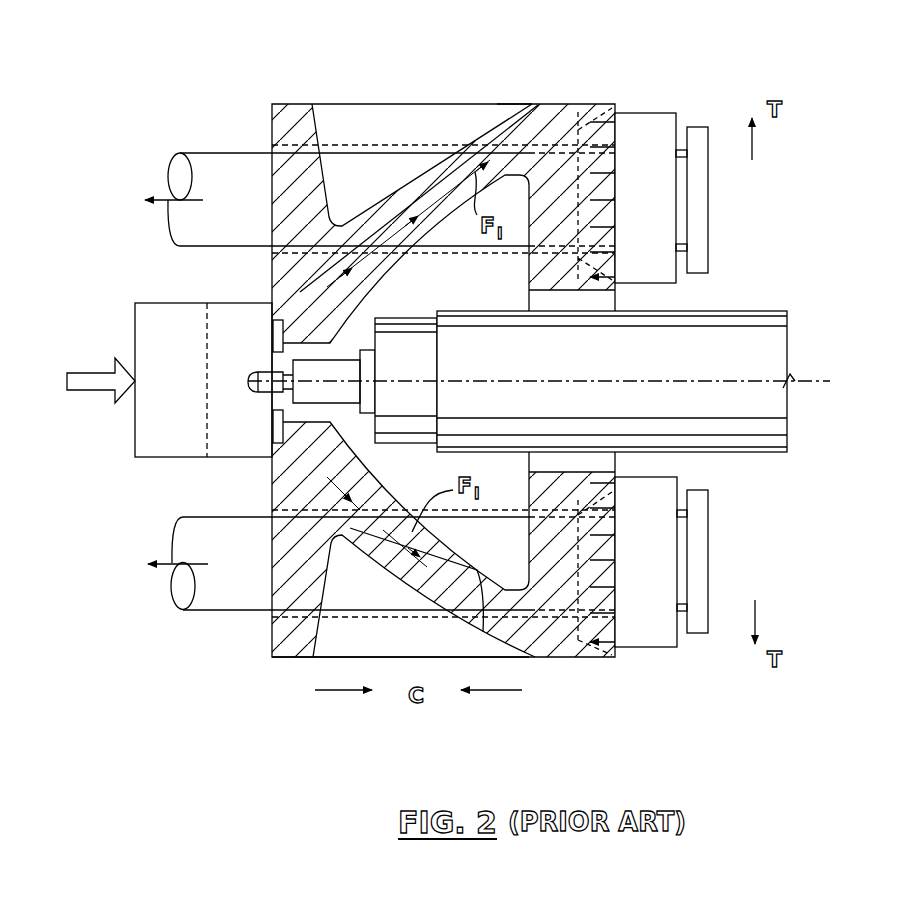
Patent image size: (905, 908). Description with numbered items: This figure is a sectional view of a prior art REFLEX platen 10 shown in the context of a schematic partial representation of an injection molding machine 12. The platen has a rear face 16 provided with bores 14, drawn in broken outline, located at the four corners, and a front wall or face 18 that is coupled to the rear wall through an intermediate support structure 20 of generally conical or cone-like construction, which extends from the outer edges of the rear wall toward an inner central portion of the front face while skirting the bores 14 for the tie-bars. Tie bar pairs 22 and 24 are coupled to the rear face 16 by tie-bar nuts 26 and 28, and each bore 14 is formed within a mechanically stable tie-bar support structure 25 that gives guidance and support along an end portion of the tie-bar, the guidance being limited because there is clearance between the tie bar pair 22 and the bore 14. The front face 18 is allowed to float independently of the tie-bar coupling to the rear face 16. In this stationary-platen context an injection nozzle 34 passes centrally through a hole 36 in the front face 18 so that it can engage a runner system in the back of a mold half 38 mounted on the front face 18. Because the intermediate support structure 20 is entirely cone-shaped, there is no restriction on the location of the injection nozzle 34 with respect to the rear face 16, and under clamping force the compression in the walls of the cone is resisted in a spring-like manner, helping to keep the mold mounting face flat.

The REFLEX platen 10 is at (385, 577).
The injection molding machine 12 is at (372, 80).
The bores 14 is at (580, 103).
The rear face 16 is at (600, 110).
The front wall/face 18 is at (272, 628).
The intermediate support structure 20 is at (414, 150).
The tie bar pair 22 is at (197, 247).
The tie bar pair 24 is at (200, 517).
The tie-bar support structure 25 is at (548, 105).
The tie-bar nut 26 is at (657, 212).
The tie-bar nut 28 is at (660, 563).
The injection nozzle 34 is at (644, 375).
The hole 36 is at (272, 360).
The mold half 38 is at (252, 441).